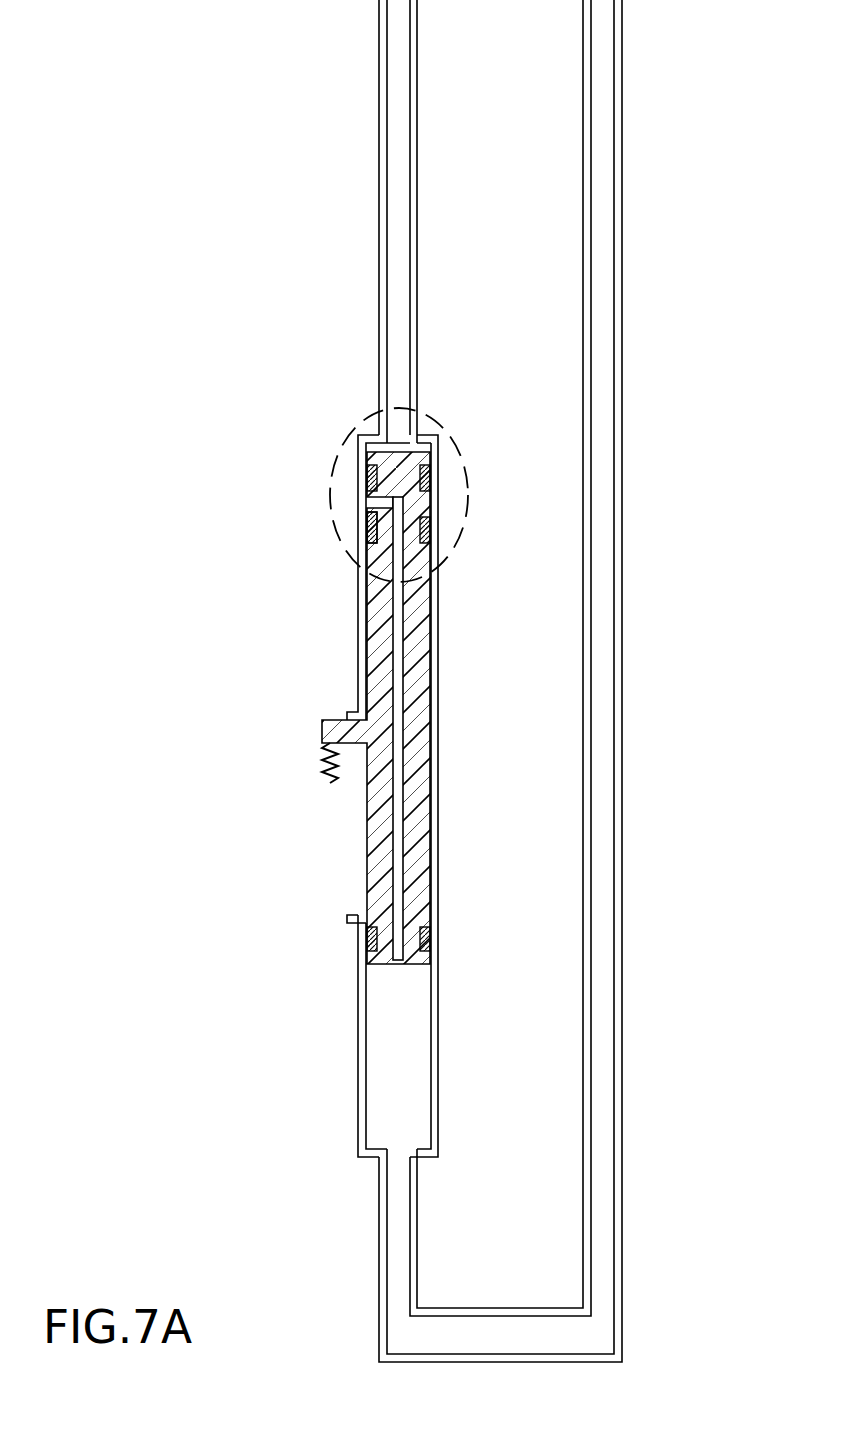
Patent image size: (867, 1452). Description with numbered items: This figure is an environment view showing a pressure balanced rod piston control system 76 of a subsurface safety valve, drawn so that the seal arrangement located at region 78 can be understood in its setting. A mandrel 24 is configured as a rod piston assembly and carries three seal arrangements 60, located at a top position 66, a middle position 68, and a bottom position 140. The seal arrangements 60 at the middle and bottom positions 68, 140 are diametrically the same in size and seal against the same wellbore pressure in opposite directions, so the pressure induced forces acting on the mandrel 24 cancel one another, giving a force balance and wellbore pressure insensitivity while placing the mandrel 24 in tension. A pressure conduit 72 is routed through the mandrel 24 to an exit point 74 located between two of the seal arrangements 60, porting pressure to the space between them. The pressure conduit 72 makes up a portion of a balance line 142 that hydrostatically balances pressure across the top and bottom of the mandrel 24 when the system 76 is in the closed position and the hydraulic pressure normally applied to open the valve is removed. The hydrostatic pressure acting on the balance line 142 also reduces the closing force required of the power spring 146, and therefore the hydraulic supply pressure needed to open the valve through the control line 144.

The mandrel 24 is at (373, 632).
The seal arrangement 60 is at (426, 477).
The top position 66 is at (368, 477).
The middle position 68 is at (368, 532).
The pressure conduit 72 is at (405, 805).
The exit point 74 is at (370, 520).
The pressure balanced rod piston control system 76 is at (212, 514).
The region 78 is at (437, 407).
The bottom position 140 is at (367, 937).
The balance line 142 is at (625, 365).
The control line 144 is at (418, 253).
The power spring 146 is at (322, 762).